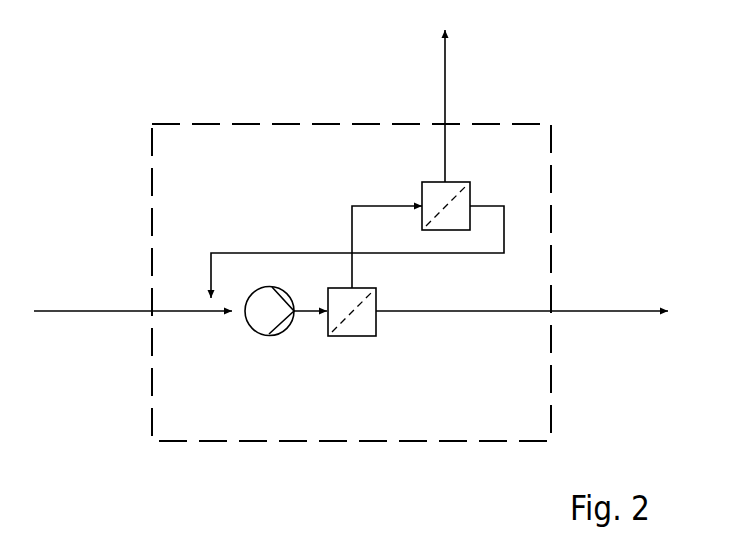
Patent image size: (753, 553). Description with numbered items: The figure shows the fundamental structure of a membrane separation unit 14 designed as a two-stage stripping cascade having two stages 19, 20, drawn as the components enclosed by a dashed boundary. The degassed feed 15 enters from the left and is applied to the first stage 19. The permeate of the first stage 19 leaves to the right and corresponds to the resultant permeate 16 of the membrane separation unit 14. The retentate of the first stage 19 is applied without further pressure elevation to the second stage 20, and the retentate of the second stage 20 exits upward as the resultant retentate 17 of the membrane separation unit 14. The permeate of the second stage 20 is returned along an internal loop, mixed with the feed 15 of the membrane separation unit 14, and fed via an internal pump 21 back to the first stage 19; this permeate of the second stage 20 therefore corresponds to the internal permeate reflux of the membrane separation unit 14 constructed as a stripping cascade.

The membrane separation unit 14 is at (152, 147).
The degassed feed 15 is at (105, 311).
The resultant permeate 16 is at (598, 311).
The resultant retentate 17 is at (445, 99).
The first stage 19 is at (376, 323).
The second stage 20 is at (422, 182).
The internal pump 21 is at (254, 329).